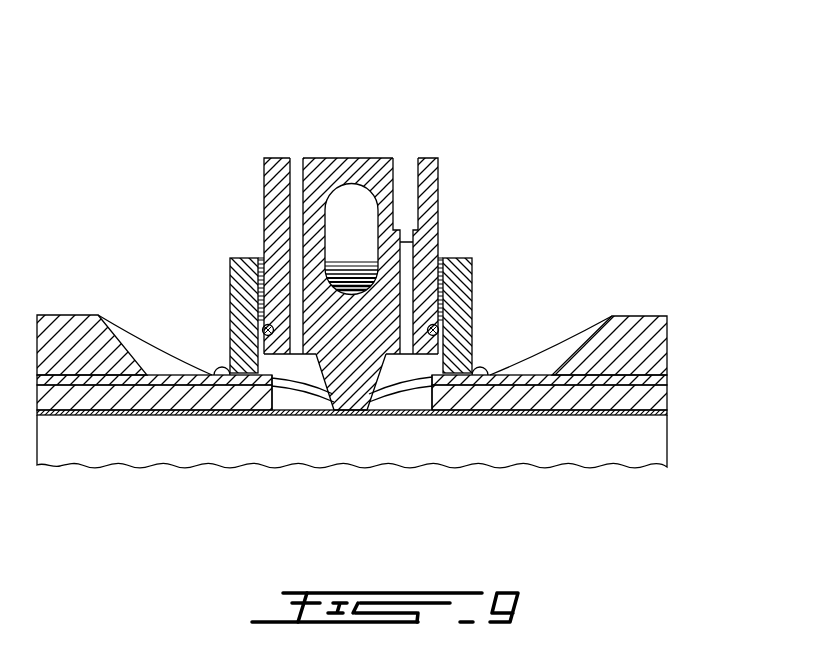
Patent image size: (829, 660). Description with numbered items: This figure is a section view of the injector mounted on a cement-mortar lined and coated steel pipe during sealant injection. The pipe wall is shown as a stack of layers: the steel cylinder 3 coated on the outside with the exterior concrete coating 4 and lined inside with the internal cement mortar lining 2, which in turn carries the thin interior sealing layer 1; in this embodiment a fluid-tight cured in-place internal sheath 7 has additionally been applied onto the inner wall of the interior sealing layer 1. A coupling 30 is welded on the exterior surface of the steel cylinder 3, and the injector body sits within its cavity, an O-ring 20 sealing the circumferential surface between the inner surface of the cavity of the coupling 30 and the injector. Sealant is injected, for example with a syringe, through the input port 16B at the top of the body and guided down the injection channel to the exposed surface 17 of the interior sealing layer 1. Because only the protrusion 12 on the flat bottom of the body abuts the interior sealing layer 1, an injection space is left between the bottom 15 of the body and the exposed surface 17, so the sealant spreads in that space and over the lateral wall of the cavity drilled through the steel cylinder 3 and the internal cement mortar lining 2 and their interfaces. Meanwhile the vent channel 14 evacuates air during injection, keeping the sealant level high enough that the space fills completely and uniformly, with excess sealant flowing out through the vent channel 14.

The interior sealing layer 1 is at (607, 433).
The internal cement mortar lining 2 is at (580, 408).
The steel cylinder 3 is at (512, 390).
The exterior concrete coating 4 is at (92, 327).
The cured in-place internal sheath 7 is at (647, 447).
The protrusion 12 is at (346, 384).
The vent channel 14 is at (297, 168).
The bottom of the body 15 is at (322, 347).
The input port 16B is at (405, 182).
The exposed surface 17 is at (296, 407).
The O-ring 20 is at (427, 345).
The coupling 30 is at (441, 197).